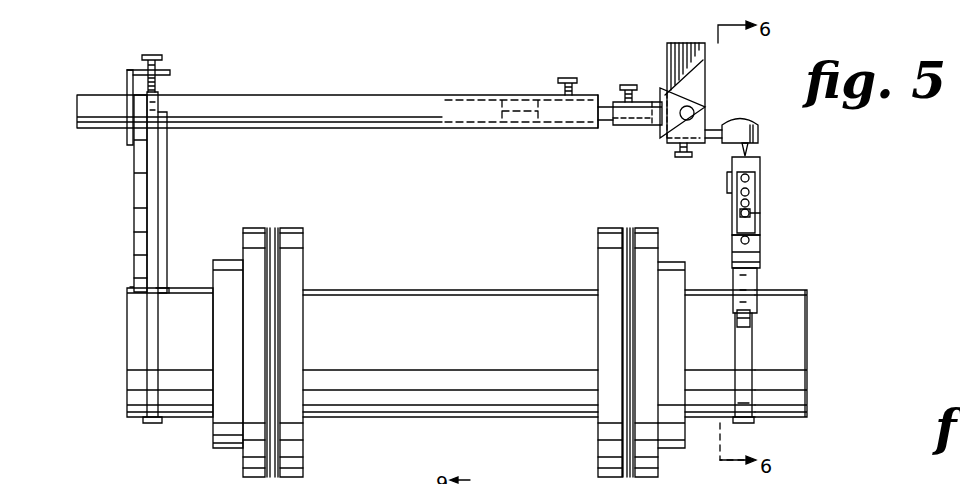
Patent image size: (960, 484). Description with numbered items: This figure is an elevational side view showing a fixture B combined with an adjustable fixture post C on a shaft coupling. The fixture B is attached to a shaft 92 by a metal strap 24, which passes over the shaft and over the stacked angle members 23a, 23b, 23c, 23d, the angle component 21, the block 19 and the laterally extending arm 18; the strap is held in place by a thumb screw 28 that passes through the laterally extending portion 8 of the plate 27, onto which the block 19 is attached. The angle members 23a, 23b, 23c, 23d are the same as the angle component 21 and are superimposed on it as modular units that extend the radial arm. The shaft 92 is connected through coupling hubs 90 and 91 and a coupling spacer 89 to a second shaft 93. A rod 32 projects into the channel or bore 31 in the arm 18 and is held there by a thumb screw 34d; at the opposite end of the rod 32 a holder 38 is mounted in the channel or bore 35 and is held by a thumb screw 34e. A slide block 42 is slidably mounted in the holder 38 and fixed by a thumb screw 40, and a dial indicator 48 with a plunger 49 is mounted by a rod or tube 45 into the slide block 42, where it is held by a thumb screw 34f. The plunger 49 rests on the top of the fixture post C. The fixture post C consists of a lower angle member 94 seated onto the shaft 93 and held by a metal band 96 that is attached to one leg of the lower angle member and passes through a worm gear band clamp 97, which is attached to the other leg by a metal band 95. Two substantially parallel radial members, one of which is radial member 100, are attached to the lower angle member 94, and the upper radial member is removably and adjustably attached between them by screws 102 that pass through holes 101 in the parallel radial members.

The laterally extending portion 8 is at (170, 72).
The laterally extending arm 18 is at (273, 98).
The block 19 is at (170, 128).
The angle component 21 is at (168, 158).
The angle member 23a is at (137, 195).
The angle member 23b is at (137, 230).
The angle member 23c is at (137, 253).
The angle member 23d is at (137, 277).
The metal strap 24 is at (142, 342).
The plate 27 is at (127, 78).
The thumb screw 28 is at (150, 55).
The channel or bore 31 is at (547, 126).
The rod 32 is at (605, 130).
The thumb screw 34d is at (566, 78).
The thumb screw 34e is at (629, 85).
The thumb screw 34f is at (688, 158).
The channel or bore 35 is at (637, 126).
The holder 38 is at (703, 62).
The thumb screw 40 is at (705, 100).
The slide block 42 is at (667, 53).
The rod or tube 45 is at (713, 131).
The dial indicator 48 is at (760, 128).
The plunger 49 is at (750, 150).
The coupling spacer 89 is at (455, 290).
The coupling hub 90 is at (232, 270).
The coupling hub 91 is at (668, 262).
The shaft 92 is at (189, 287).
The shaft 93 is at (775, 408).
The lower angle member 94 is at (757, 252).
The metal band 95 is at (748, 285).
The metal band 96 is at (748, 352).
The worm gear band clamp 97 is at (754, 312).
The radial member 100 is at (757, 225).
The holes 101 is at (757, 193).
The screws 102 is at (750, 212).
The fixture B is at (330, 92).
The fixture post C is at (768, 176).